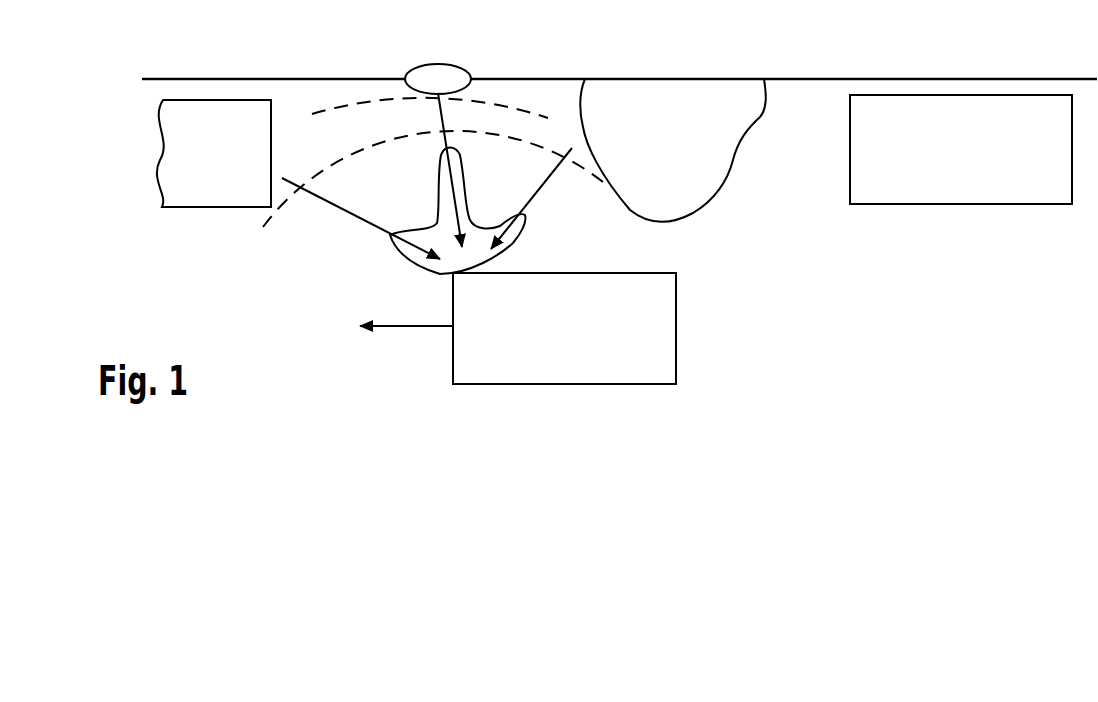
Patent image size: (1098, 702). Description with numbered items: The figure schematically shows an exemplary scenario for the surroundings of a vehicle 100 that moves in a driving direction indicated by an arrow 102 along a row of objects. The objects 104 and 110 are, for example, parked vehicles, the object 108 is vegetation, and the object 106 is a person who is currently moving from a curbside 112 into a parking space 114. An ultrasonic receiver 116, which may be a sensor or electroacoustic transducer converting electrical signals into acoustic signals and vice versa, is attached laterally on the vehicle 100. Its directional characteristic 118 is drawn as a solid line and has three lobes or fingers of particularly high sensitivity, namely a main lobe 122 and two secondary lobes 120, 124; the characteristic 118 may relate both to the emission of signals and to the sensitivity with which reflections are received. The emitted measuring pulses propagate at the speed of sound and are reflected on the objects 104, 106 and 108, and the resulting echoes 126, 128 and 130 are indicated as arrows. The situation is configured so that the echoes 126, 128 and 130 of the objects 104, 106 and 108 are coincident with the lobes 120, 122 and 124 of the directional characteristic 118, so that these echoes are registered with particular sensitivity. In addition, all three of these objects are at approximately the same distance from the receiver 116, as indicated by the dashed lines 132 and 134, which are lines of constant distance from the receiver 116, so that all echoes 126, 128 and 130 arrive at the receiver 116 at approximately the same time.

The vehicle 100 is at (676, 330).
The arrow 102 is at (408, 327).
The object 104 is at (200, 100).
The object 106 is at (438, 64).
The object 108 is at (670, 113).
The object 110 is at (950, 95).
The curbside 112 is at (1050, 79).
The parking space 114 is at (352, 130).
The ultrasonic receiver 116 is at (463, 280).
The directional characteristic 118 is at (518, 253).
The secondary lobe 120 is at (395, 262).
The main lobe 122 is at (467, 172).
The secondary lobe 124 is at (532, 225).
The echo 126 is at (330, 203).
The echo 128 is at (440, 122).
The echo 130 is at (553, 177).
The dashed line 132 is at (338, 163).
The dashed line 134 is at (532, 110).